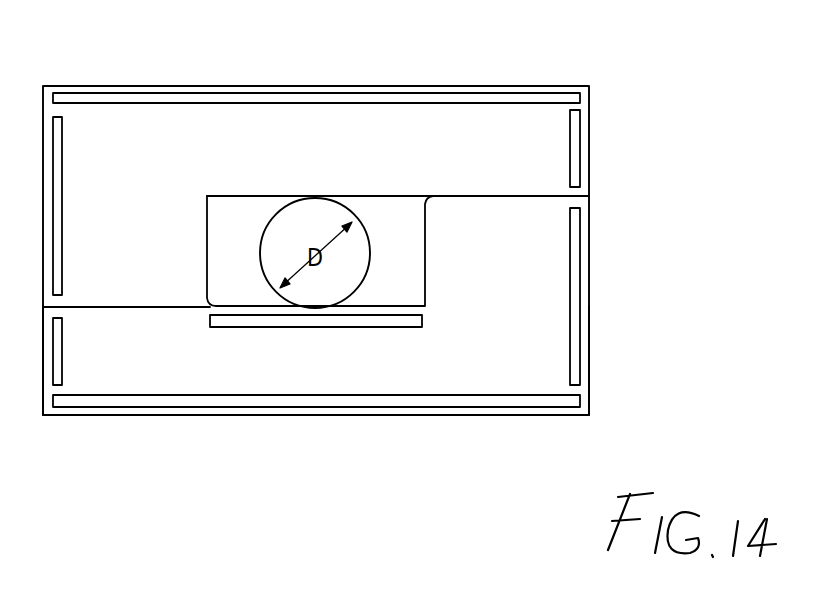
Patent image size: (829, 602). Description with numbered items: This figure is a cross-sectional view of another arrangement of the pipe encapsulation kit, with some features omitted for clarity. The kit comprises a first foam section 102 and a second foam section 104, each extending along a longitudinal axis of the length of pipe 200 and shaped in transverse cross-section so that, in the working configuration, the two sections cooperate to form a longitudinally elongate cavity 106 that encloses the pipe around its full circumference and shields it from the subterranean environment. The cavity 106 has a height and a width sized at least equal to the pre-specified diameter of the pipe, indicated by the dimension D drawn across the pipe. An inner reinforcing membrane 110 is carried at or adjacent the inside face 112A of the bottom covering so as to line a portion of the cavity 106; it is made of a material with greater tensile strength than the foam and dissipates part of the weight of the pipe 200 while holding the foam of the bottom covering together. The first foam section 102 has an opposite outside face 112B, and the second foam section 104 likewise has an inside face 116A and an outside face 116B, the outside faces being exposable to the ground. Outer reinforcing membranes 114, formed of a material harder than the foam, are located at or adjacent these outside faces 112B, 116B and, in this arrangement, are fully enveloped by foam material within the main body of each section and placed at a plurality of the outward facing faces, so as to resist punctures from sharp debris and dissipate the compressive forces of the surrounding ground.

The first foam section 102 is at (586, 388).
The second foam section 104 is at (588, 94).
The longitudinally elongate cavity 106 is at (240, 220).
The inner reinforcing membrane 110 is at (406, 326).
The inside face of the bottom covering 112A is at (236, 305).
The outside face of the bottom covering 112B is at (278, 419).
The outer reinforcing membrane 114 is at (139, 100).
The inside face of the second foam section 116A is at (389, 197).
The outside face of the second foam section 116B is at (227, 93).
The length of pipe 200 is at (347, 207).